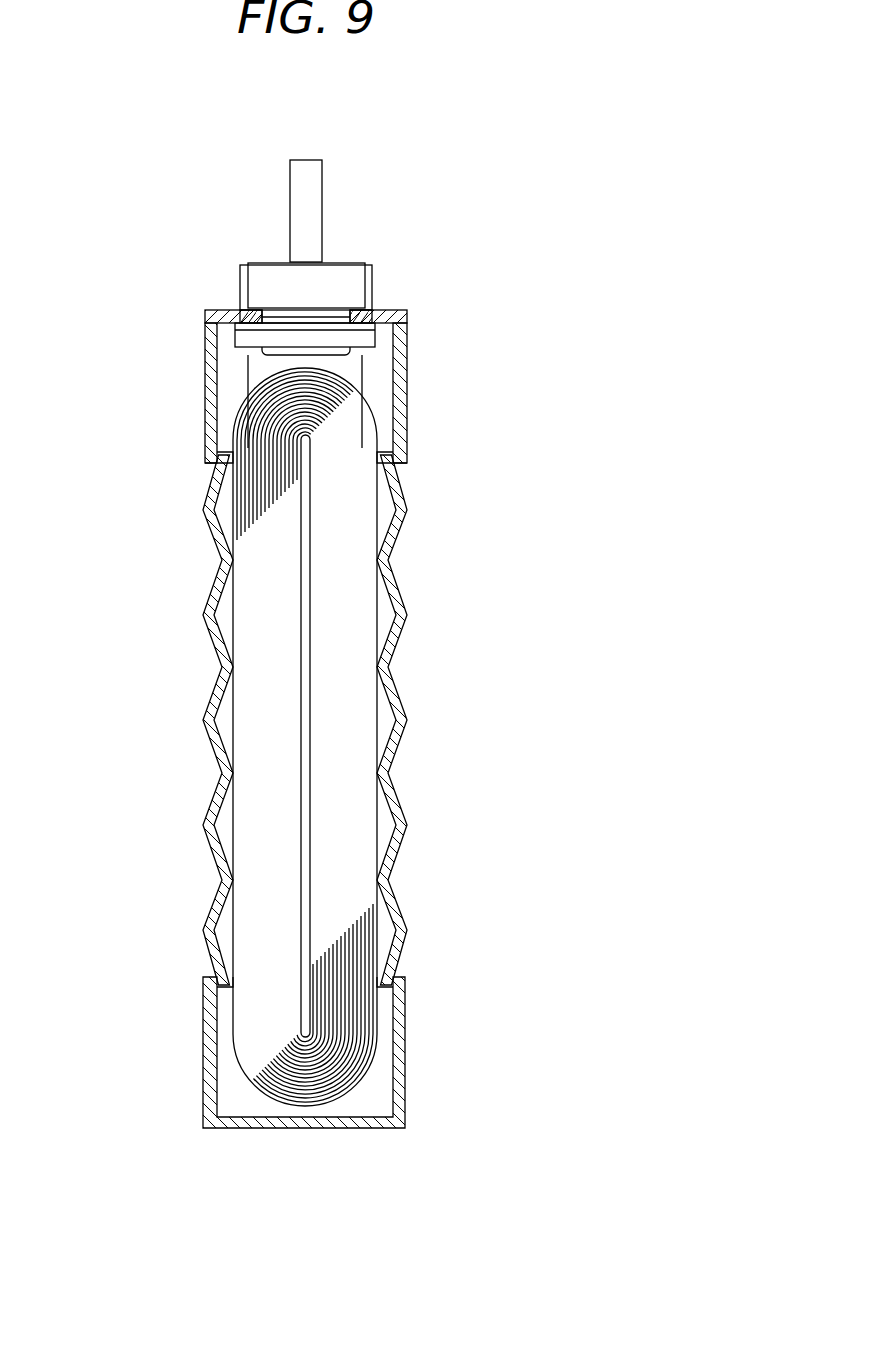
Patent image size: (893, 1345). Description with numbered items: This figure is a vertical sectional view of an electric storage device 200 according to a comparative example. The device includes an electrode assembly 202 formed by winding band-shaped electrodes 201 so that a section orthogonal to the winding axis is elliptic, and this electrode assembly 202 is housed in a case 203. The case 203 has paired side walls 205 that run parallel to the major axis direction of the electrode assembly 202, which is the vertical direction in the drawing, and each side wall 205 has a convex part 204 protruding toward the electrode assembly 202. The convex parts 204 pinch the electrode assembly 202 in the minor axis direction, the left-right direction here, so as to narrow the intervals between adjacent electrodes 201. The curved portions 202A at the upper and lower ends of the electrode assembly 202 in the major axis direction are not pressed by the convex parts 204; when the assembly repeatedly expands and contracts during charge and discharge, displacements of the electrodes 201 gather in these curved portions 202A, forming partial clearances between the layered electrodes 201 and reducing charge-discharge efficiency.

The electric storage device 200 is at (420, 152).
The band-shaped electrodes 201 is at (358, 1018).
The electrode assembly 202 is at (380, 1048).
The curved portions 202A is at (345, 384).
The case 203 is at (409, 383).
The convex parts 204 is at (381, 668).
The side walls 205 is at (205, 399).